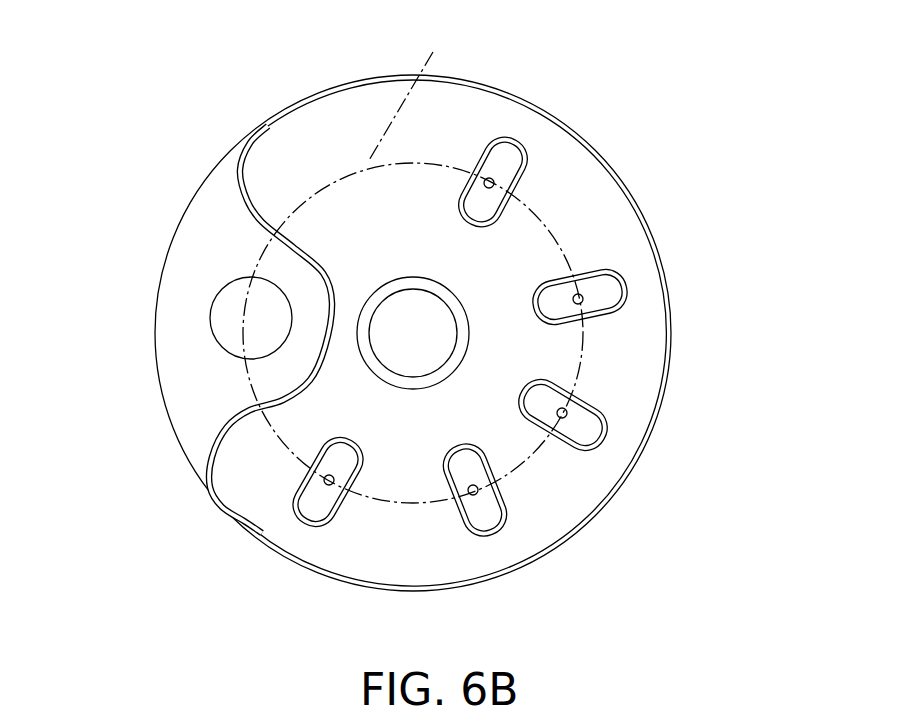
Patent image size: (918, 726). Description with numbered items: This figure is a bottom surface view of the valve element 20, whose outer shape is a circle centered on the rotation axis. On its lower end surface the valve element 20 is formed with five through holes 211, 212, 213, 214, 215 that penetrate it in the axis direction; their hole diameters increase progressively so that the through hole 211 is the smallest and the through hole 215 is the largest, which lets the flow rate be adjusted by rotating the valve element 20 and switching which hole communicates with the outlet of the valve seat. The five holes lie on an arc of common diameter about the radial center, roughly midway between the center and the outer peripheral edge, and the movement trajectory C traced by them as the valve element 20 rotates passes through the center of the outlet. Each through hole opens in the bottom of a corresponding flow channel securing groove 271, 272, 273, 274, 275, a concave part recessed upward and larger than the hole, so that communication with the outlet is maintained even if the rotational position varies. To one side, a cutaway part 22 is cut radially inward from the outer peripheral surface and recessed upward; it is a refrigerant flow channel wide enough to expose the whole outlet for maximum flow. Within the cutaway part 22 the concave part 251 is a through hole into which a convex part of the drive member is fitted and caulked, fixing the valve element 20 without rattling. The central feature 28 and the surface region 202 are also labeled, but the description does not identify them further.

The valve element 20 is at (660, 179).
The cutaway part 22 is at (207, 226).
The center hole 28 is at (383, 308).
The second surface 202 is at (434, 432).
The through hole 211 is at (497, 138).
The through hole 212 is at (610, 270).
The through hole 213 is at (590, 402).
The through hole 214 is at (503, 508).
The through hole 215 is at (340, 517).
The concave part 251 is at (212, 308).
The flow channel securing groove 271 is at (522, 147).
The flow channel securing groove 272 is at (632, 302).
The flow channel securing groove 273 is at (610, 432).
The flow channel securing groove 274 is at (495, 535).
The flow channel securing groove 275 is at (307, 522).
The movement trajectory C is at (402, 92).